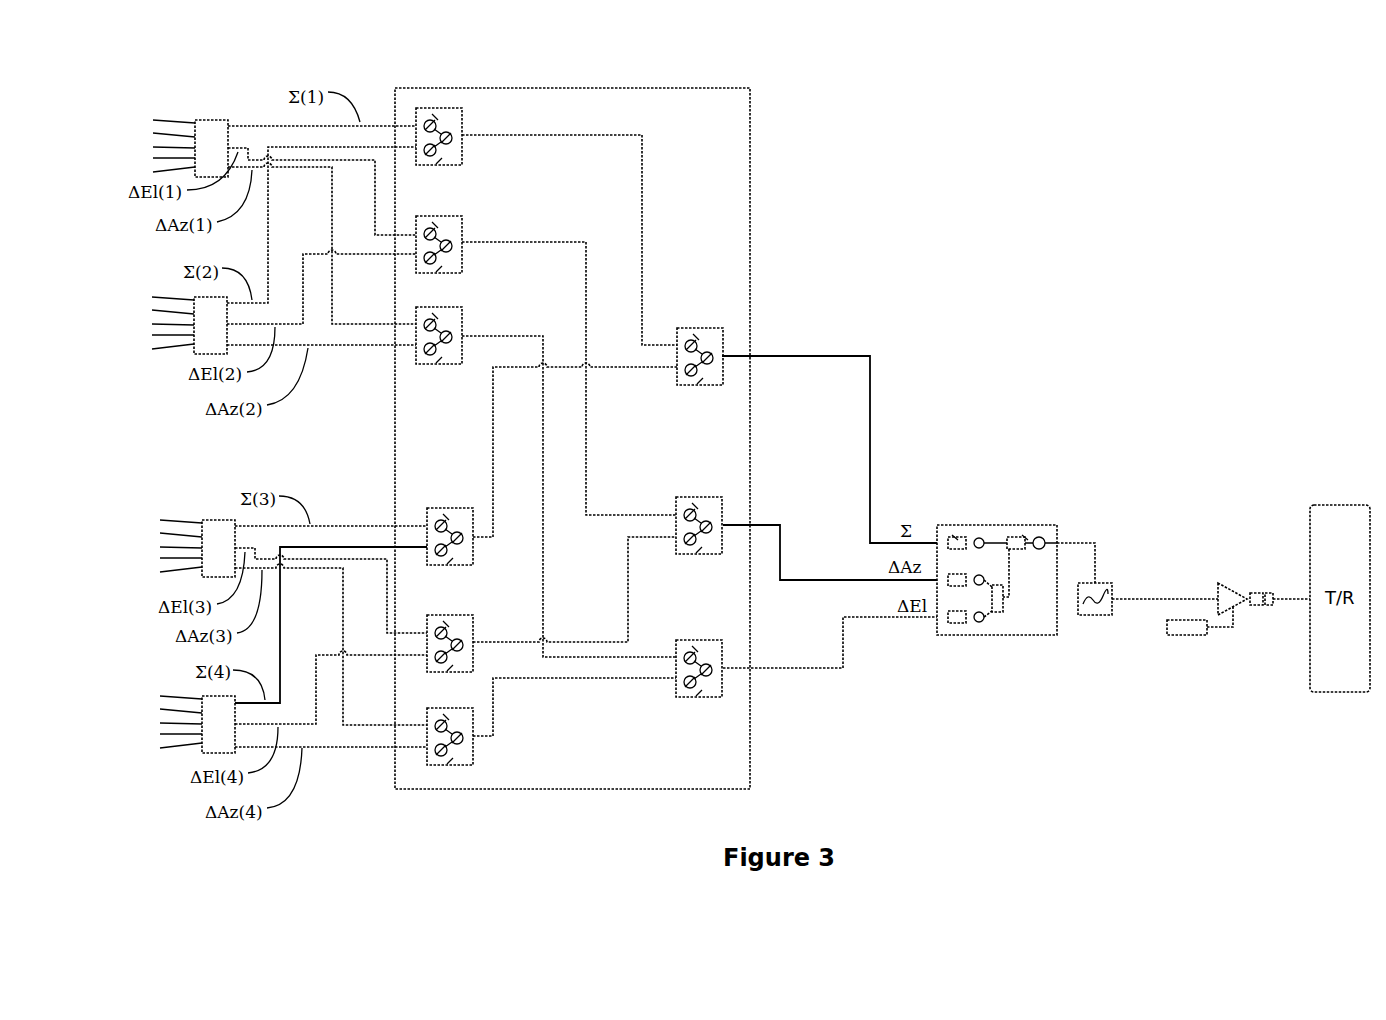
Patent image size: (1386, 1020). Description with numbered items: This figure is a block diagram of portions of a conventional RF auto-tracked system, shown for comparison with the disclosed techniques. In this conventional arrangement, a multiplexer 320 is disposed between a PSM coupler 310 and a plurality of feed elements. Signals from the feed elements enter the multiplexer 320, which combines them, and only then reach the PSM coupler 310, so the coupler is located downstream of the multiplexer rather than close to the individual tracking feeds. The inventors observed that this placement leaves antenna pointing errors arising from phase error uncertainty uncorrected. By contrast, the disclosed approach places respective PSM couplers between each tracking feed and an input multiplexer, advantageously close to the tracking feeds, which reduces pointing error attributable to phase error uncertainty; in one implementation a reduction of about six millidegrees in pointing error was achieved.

The PSM coupler 310 is at (980, 525).
The multiplexer 320 is at (750, 135).